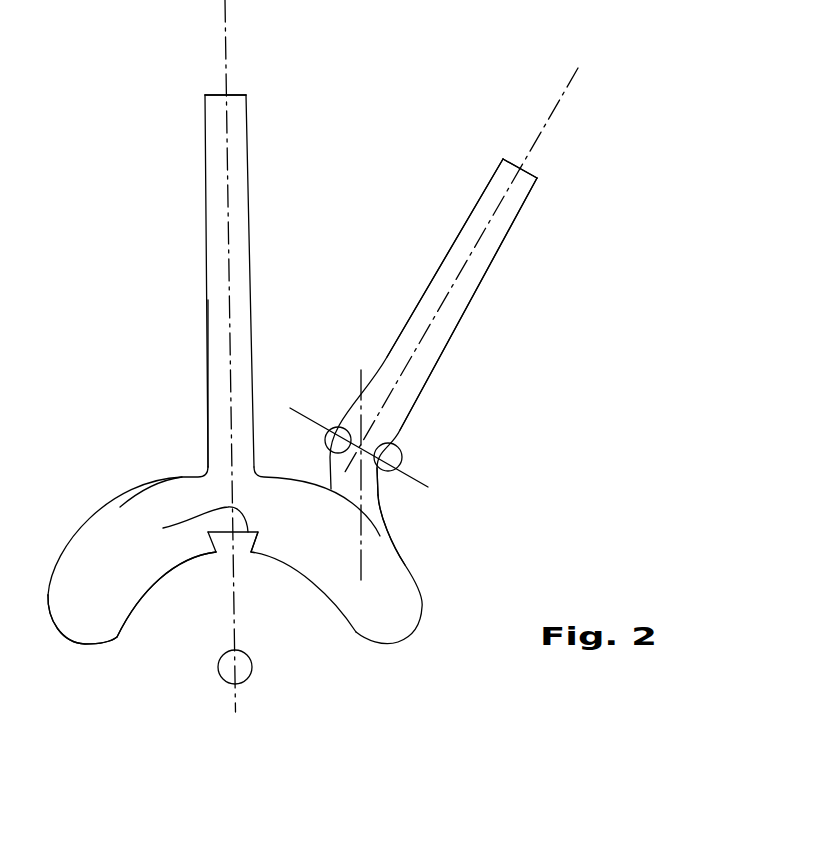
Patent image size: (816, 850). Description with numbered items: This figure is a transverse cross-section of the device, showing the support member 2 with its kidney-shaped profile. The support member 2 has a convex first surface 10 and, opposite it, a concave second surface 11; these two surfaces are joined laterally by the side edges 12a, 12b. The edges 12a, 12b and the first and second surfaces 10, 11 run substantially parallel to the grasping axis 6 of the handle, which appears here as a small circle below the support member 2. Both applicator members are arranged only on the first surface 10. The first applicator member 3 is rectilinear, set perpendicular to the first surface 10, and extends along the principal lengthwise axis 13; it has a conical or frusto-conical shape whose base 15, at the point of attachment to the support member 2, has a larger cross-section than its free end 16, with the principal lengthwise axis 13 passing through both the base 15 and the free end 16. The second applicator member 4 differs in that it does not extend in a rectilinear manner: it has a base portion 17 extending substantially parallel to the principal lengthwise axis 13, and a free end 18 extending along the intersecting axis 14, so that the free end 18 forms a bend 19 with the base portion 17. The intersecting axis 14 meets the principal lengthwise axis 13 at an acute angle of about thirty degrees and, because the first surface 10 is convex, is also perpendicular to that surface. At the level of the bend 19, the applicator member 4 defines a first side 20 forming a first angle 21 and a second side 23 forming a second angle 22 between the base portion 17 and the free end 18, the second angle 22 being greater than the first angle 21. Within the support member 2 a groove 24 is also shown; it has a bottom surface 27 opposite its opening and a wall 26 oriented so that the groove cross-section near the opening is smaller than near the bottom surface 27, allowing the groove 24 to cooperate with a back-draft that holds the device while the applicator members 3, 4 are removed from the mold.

The support member 2 is at (100, 612).
The first applicator member 3 is at (238, 127).
The second applicator member 4 is at (517, 195).
The grasping axis 6 is at (235, 667).
The first surface 10 is at (182, 477).
The second surface 11 is at (173, 573).
The side edge 12a is at (50, 628).
The side edge 12b is at (410, 632).
The principal lengthwise axis 13 is at (226, 22).
The intersecting axis 14 is at (570, 82).
The base 15 is at (247, 452).
The free end 16 is at (213, 108).
The base portion 17 is at (380, 497).
The free end 18 is at (490, 235).
The bend 19 is at (393, 450).
The first side 20 is at (437, 367).
The first angle 21 is at (398, 467).
The second angle 22 is at (342, 425).
The second side 23 is at (387, 358).
The groove 24 is at (225, 543).
The wall 26 is at (245, 543).
The bottom surface 27 is at (190, 523).